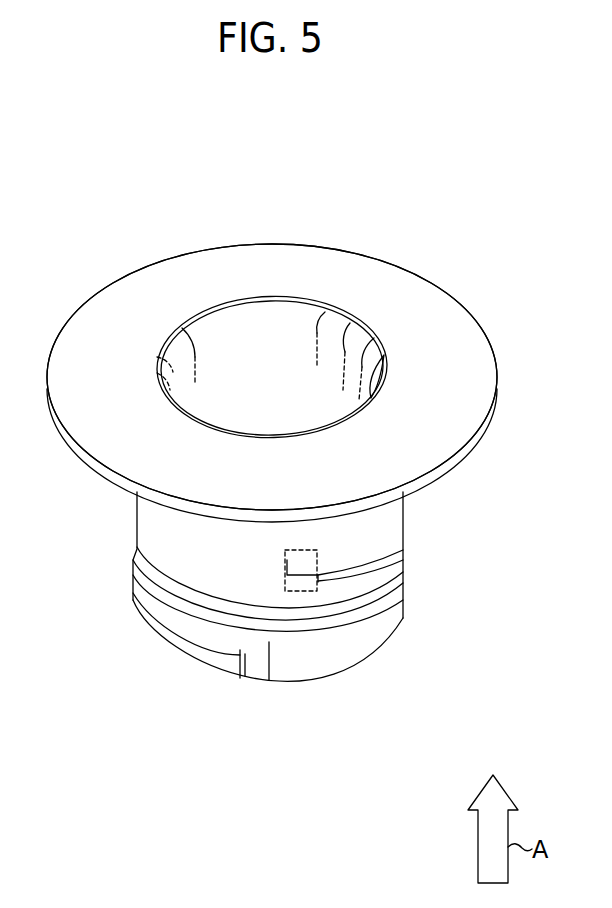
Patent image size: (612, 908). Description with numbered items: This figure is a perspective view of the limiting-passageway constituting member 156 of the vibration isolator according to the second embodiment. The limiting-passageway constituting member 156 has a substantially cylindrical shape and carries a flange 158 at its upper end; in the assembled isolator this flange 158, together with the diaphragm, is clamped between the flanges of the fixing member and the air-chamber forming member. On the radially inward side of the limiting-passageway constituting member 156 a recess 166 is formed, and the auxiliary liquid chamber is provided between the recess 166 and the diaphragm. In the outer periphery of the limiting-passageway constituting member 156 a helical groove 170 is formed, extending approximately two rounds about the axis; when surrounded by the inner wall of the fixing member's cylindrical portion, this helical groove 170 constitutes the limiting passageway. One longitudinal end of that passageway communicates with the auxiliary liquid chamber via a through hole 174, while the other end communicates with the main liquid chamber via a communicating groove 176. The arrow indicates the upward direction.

The limiting-passageway constituting member 156 is at (425, 268).
The flange 158 is at (452, 358).
The recess 166 is at (283, 374).
The helical groove 170 is at (367, 611).
The through hole 174 is at (300, 578).
The communicating groove 176 is at (246, 664).